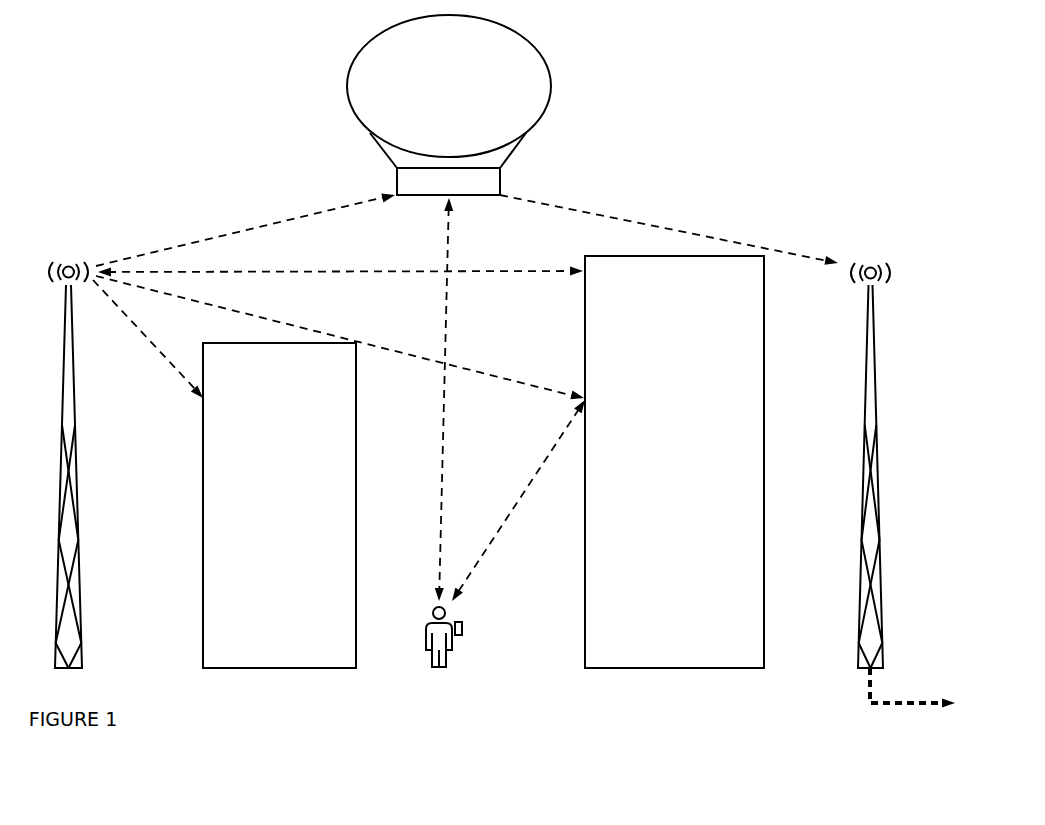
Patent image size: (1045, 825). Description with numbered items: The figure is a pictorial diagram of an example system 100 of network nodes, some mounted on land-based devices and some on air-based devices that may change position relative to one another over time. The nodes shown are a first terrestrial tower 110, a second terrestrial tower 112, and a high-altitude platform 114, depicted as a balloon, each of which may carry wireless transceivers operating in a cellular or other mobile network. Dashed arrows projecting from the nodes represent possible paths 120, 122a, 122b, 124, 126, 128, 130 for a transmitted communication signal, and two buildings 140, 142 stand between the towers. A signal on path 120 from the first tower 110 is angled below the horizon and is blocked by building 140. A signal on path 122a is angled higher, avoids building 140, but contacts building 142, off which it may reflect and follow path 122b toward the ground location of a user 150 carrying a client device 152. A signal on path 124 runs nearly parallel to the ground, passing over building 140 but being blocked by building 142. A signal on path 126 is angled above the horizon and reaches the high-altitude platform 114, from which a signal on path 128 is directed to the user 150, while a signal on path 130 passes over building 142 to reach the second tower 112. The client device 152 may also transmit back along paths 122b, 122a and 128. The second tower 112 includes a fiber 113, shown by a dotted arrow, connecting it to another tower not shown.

The system 100 is at (87, 699).
The first terrestrial tower 110 is at (68, 439).
The second terrestrial tower 112 is at (870, 439).
The fiber 113 is at (912, 698).
The high-altitude platform 114 is at (428, 93).
The path 120 is at (148, 339).
The path 122a is at (340, 337).
The path 122b is at (518, 500).
The path 124 is at (340, 262).
The path 126 is at (245, 230).
The path 128 is at (431, 399).
The path 130 is at (669, 230).
The building 140 is at (263, 522).
The building 142 is at (650, 472).
The user 150 is at (450, 651).
The client device 152 is at (477, 629).